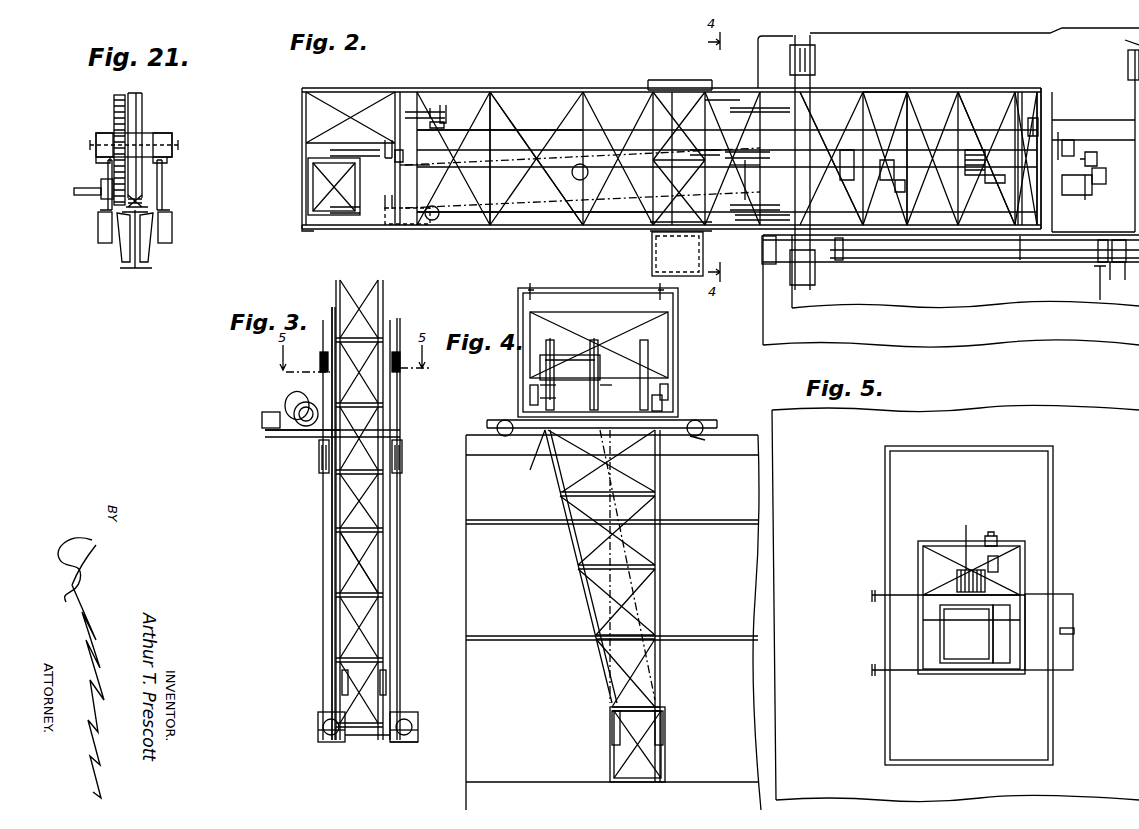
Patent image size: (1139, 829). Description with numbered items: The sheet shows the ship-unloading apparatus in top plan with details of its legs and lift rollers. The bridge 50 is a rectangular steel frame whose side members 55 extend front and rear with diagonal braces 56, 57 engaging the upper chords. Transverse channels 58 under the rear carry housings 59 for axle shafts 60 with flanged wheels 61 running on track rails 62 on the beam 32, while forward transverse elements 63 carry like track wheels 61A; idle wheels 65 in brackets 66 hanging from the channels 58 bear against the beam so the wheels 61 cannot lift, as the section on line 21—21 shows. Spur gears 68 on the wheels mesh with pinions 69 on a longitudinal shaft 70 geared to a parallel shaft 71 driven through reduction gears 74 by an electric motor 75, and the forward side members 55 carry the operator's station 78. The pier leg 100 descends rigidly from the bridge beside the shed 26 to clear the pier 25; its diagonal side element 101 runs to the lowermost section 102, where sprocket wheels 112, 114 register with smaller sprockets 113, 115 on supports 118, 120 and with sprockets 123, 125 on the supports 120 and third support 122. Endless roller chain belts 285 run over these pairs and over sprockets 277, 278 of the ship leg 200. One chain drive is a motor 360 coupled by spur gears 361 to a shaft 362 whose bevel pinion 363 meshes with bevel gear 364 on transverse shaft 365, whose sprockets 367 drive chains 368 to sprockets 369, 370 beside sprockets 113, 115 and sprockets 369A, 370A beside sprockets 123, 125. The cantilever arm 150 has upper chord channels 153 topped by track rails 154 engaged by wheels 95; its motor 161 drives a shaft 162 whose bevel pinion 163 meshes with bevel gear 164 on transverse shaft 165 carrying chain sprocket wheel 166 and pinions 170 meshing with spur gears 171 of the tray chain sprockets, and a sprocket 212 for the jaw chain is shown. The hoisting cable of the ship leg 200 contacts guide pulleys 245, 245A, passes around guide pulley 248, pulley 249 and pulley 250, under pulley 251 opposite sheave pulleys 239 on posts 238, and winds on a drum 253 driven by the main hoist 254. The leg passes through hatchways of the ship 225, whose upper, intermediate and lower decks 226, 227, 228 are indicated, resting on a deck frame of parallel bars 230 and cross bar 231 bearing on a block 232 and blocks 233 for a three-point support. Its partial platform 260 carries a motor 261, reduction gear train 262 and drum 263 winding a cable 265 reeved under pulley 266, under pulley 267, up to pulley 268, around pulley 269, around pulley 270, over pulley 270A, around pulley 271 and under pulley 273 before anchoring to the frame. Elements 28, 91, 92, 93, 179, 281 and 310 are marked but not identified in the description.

In FIG. 2, the section line 21 is at (1092, 285).
In FIG. 2, the pier 25 is at (920, 340).
In FIG. 2, the shed 26 is at (966, 300).
In FIG. 3, the carriage beam 28 is at (356, 429).
In FIG. 4, the carriage beam 28 is at (466, 446).
In FIG. 21, the beam 32 is at (150, 266).
In FIG. 2, the bridge 50 is at (1042, 88).
In FIG. 4, the bridge 50 is at (678, 330).
In FIG. 2, the side members 55 is at (1128, 282).
In FIG. 4, the side members 55 is at (660, 434).
In FIG. 2, the diagonal braces 56 is at (665, 80).
In FIG. 2, the diagonal braces 57 is at (951, 248).
In FIG. 21, the channels 58 is at (162, 182).
In FIG. 2, the channels 58 is at (1112, 282).
In FIG. 21, the housings 59 is at (170, 132).
In FIG. 21, the axle shafts 60 is at (176, 146).
In FIG. 2, the axle shafts 60 is at (1125, 40).
In FIG. 21, the wheels 61 is at (140, 108).
In FIG. 2, the wheels 61 is at (1128, 60).
In FIG. 2, the track wheels 61A is at (768, 264).
In FIG. 4, the track wheels 61A is at (700, 436).
In FIG. 21, the track rails 62 is at (150, 205).
In FIG. 2, the transverse elements 63 is at (812, 52).
In FIG. 4, the transverse elements 63 is at (710, 420).
In FIG. 21, the idle wheels 65 is at (118, 258).
In FIG. 21, the brackets 66 is at (98, 230).
In FIG. 21, the spur gears 68 is at (112, 104).
In FIG. 21, the pinions 69 is at (101, 186).
In FIG. 21, the longitudinal shaft 70 is at (74, 192).
In FIG. 2, the parallel shaft 71 is at (996, 262).
In FIG. 2, the reduction gears 74 is at (1098, 258).
In FIG. 2, the electric motor 75 is at (1118, 262).
In FIG. 2, the operator's station 78 is at (652, 262).
In FIG. 2, the post 91 is at (935, 120).
In FIG. 2, the motor 92 is at (1070, 140).
In FIG. 2, the switch 93 is at (1092, 155).
In FIG. 2, the wheels 95 is at (1028, 92).
In FIG. 4, the pier leg 100 is at (660, 586).
In FIG. 4, the side element 101 is at (580, 548).
In FIG. 4, the lowermost section 102 is at (614, 744).
In FIG. 4, the sprocket wheels 112 is at (663, 724).
In FIG. 2, the sprockets 113 is at (745, 205).
In FIG. 4, the sprockets 113 is at (652, 366).
In FIG. 4, the sprocket wheels 114 is at (612, 716).
In FIG. 2, the sprockets 115 is at (740, 166).
In FIG. 4, the sprockets 115 is at (600, 372).
In FIG. 4, the supports 118 is at (662, 402).
In FIG. 4, the supports 120 is at (592, 378).
In FIG. 4, the third support 122 is at (543, 436).
In FIG. 2, the sprockets 123 is at (740, 152).
In FIG. 4, the sprockets 123 is at (546, 372).
In FIG. 2, the sprockets 125 is at (712, 100).
In FIG. 4, the sprockets 125 is at (530, 395).
In FIG. 4, the cantilever arm 150 is at (540, 326).
In FIG. 2, the channels 153 is at (500, 88).
In FIG. 2, the track rails 154 is at (620, 229).
In FIG. 2, the motor 161 is at (1040, 125).
In FIG. 2, the shaft 162 is at (560, 95).
In FIG. 2, the bevel pinion 163 is at (444, 126).
In FIG. 2, the bevel gear 164 is at (442, 108).
In FIG. 2, the transverse shaft 165 is at (420, 112).
In FIG. 2, the chain sprocket wheel 166 is at (432, 108).
In FIG. 2, the pinions 170 is at (430, 168).
In FIG. 2, the spur gears 171 is at (400, 162).
In FIG. 2, the clamp 179 is at (386, 140).
In FIG. 2, the ship leg 200 is at (308, 185).
In FIG. 3, the ship leg 200 is at (336, 548).
In FIG. 5, the ship leg 200 is at (975, 634).
In FIG. 2, the sprocket 212 is at (302, 229).
In FIG. 5, the ship 225 is at (1052, 410).
In FIG. 5, the upper deck 226 is at (1000, 605).
In FIG. 4, the intermediate deck 227 is at (680, 522).
In FIG. 4, the lower deck 228 is at (734, 638).
In FIG. 5, the parallel bars 230 is at (902, 668).
In FIG. 5, the cross bar 231 is at (1074, 608).
In FIG. 5, the block 232 is at (1074, 632).
In FIG. 5, the blocks 233 is at (872, 596).
In FIG. 3, the posts 238 is at (332, 386).
In FIG. 3, the sheave pulleys 239 is at (402, 362).
In FIG. 2, the guide pulleys 245 is at (432, 220).
In FIG. 2, the guide pulley 245A is at (588, 178).
In FIG. 2, the guide pulley 248 is at (390, 224).
In FIG. 2, the pulley 249 is at (330, 120).
In FIG. 2, the pulley 250 is at (350, 150).
In FIG. 3, the pulley 251 is at (320, 358).
In FIG. 2, the drum 253 is at (980, 115).
In FIG. 2, the main hoist 254 is at (985, 185).
In FIG. 3, the partial platform 260 is at (268, 436).
In FIG. 5, the partial platform 260 is at (926, 541).
In FIG. 3, the motor 261 is at (262, 418).
In FIG. 5, the motor 261 is at (994, 534).
In FIG. 3, the reduction gear train 262 is at (290, 400).
In FIG. 5, the reduction gear train 262 is at (998, 562).
In FIG. 3, the drum 263 is at (304, 418).
In FIG. 5, the drum 263 is at (957, 582).
In FIG. 3, the cable 265 is at (323, 498).
In FIG. 5, the cable 265 is at (966, 560).
In FIG. 3, the pulley 266 is at (324, 734).
In FIG. 3, the pulley 267 is at (412, 742).
In FIG. 3, the pulley 268 is at (402, 462).
In FIG. 3, the pulley 269 is at (414, 744).
In FIG. 3, the pulley 270 is at (306, 747).
In FIG. 3, the pulley 270A is at (319, 462).
In FIG. 3, the pulley 271 is at (328, 744).
In FIG. 3, the pulley 273 is at (397, 772).
In FIG. 3, the sprocket wheels 277 is at (380, 682).
In FIG. 2, the sprockets 278 is at (330, 208).
In FIG. 2, the diagonal 281 is at (850, 100).
In FIG. 2, the endless roller chain belts 285 is at (536, 229).
In FIG. 3, the endless roller chain belts 285 is at (340, 610).
In FIG. 4, the endless roller chain belts 285 is at (605, 574).
In FIG. 2, the rod 310 is at (746, 170).
In FIG. 2, the motor 360 is at (1106, 178).
In FIG. 2, the spur gears 361 is at (1090, 195).
In FIG. 2, the shaft 362 is at (1066, 196).
In FIG. 2, the bevel pinion 363 is at (905, 192).
In FIG. 2, the bevel gear 364 is at (848, 182).
In FIG. 2, the transverse shaft 365 is at (888, 182).
In FIG. 2, the sprockets 367 is at (885, 100).
In FIG. 2, the chains 368 is at (840, 262).
In FIG. 2, the sprocket 369 is at (745, 229).
In FIG. 4, the sprocket 369 is at (670, 390).
In FIG. 2, the sprocket 369A is at (705, 150).
In FIG. 4, the sprocket 369A is at (556, 396).
In FIG. 4, the sprocket 370 is at (602, 390).
In FIG. 2, the sprocket 370A is at (740, 108).
In FIG. 4, the sprocket 370A is at (556, 384).